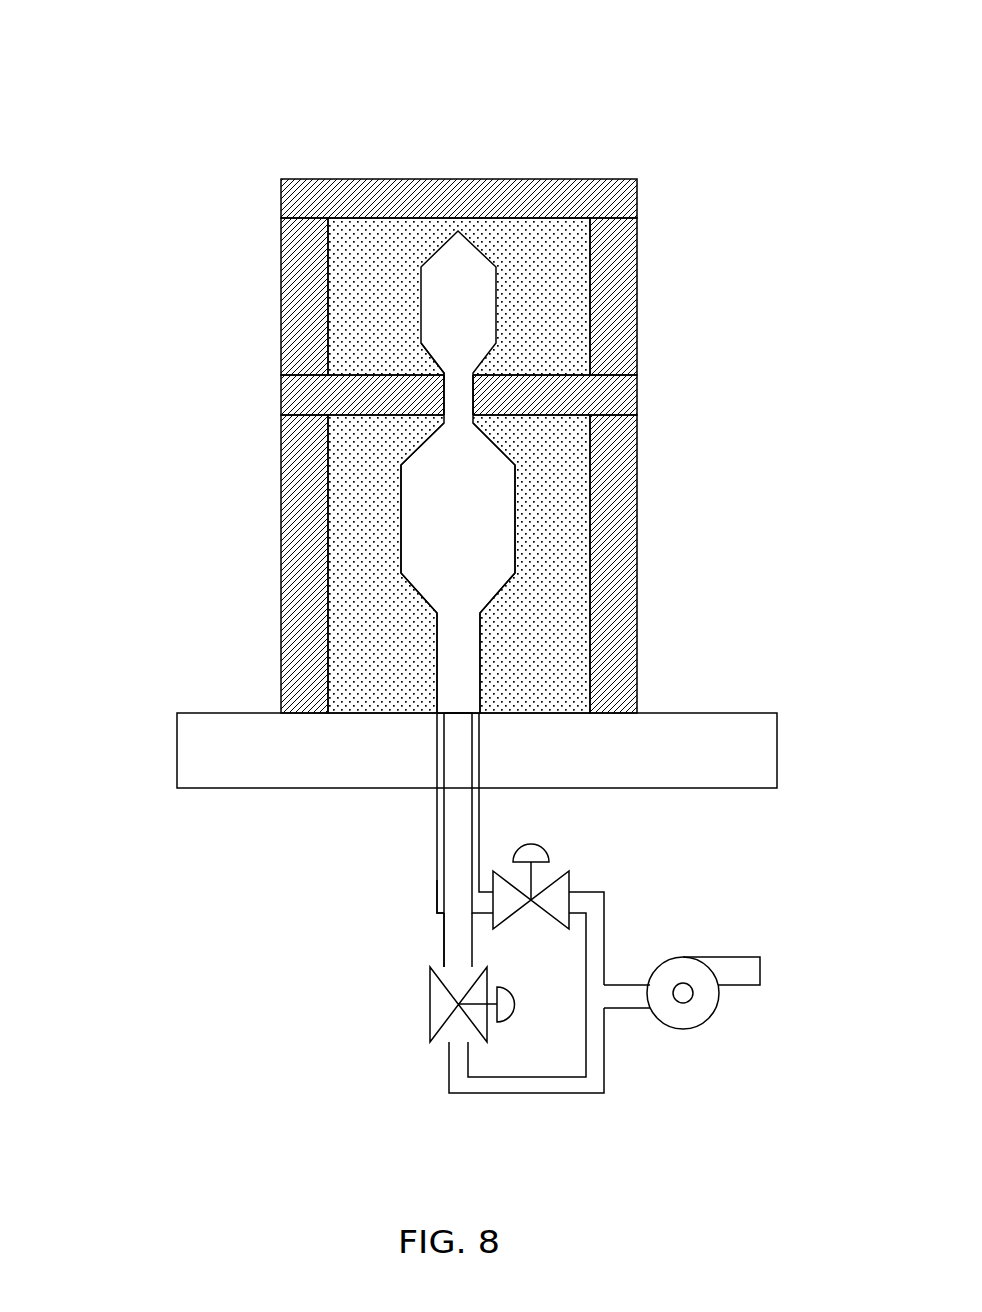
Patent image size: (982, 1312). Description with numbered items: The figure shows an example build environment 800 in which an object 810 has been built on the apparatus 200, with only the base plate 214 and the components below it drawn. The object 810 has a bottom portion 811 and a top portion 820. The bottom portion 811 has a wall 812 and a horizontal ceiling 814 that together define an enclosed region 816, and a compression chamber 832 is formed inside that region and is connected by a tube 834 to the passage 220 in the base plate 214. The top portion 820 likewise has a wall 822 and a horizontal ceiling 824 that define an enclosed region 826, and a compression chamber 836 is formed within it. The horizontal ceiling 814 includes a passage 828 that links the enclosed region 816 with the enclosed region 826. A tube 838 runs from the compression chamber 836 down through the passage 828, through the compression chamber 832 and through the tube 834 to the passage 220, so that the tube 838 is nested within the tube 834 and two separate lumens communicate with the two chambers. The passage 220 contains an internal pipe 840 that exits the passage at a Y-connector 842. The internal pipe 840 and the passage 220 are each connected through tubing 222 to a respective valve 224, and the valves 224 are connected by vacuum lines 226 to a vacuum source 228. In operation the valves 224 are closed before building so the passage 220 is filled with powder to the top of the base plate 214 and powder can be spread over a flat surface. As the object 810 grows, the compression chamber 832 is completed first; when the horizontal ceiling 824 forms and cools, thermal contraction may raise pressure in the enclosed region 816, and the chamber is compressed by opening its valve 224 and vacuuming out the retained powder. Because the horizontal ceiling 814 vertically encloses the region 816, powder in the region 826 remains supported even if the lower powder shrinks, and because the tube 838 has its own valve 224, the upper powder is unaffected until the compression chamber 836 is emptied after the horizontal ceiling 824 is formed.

The build environment 800 is at (174, 64).
The object 810 is at (355, 167).
The bottom portion 811 is at (271, 407).
The wall 812 is at (637, 583).
The horizontal ceiling 814 is at (637, 397).
The enclosed region 816 is at (352, 530).
The top portion 820 is at (271, 232).
The wall 822 is at (287, 302).
The horizontal ceiling 824 is at (515, 178).
The enclosed region 826 is at (559, 290).
The passage 828 is at (476, 386).
The compression chamber 832 is at (498, 585).
The tube 834 is at (438, 645).
The compression chamber 836 is at (435, 262).
The tube 838 is at (444, 372).
The internal pipe 840 is at (452, 850).
The Y-connector 842 is at (436, 896).
The apparatus 200 is at (154, 745).
The base plate 214 is at (287, 790).
The passage 220 is at (437, 768).
The tubing 222 is at (444, 950).
The valve 224 is at (569, 871).
The vacuum line 226 is at (517, 1093).
The vacuum source 228 is at (688, 1028).